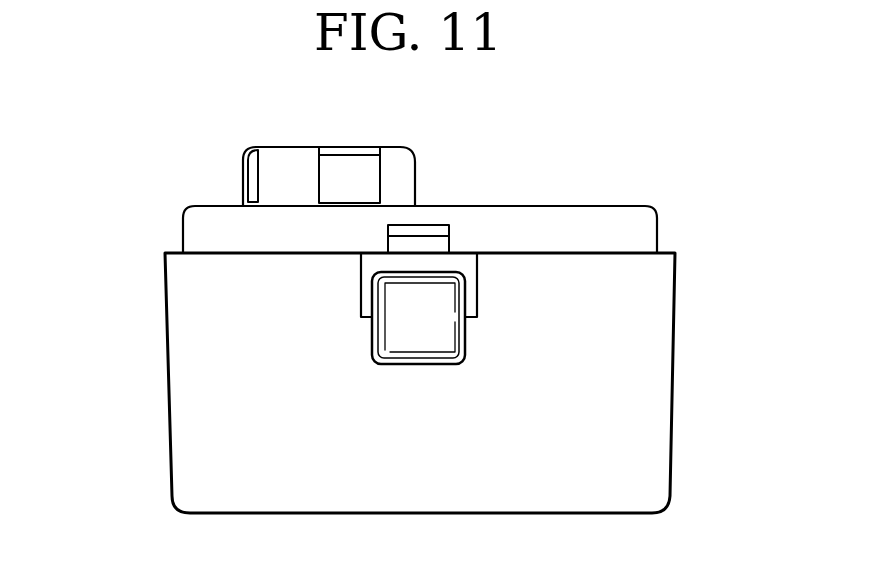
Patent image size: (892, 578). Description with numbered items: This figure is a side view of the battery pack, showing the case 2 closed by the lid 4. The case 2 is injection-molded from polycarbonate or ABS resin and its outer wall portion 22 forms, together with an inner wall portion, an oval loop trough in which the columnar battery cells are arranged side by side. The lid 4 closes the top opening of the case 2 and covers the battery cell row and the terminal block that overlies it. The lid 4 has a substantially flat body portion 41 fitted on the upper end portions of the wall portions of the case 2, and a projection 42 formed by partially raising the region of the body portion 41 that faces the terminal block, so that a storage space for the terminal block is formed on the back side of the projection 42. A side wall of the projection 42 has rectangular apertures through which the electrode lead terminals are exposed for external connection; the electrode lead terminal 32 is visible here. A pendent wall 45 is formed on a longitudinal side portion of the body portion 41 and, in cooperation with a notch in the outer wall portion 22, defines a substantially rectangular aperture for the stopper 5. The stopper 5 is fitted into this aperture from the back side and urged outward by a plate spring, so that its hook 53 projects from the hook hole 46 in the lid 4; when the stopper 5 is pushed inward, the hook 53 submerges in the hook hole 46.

The case 2 is at (150, 293).
The lid 4 is at (657, 193).
The stopper 5 is at (442, 337).
The outer wall portion 22 is at (642, 442).
The electrode lead terminal 32 is at (365, 171).
The body portion 41 is at (195, 238).
The projection 42 is at (272, 179).
The pendent wall 45 is at (463, 264).
The hook hole 46 is at (442, 243).
The hook 53 is at (438, 229).